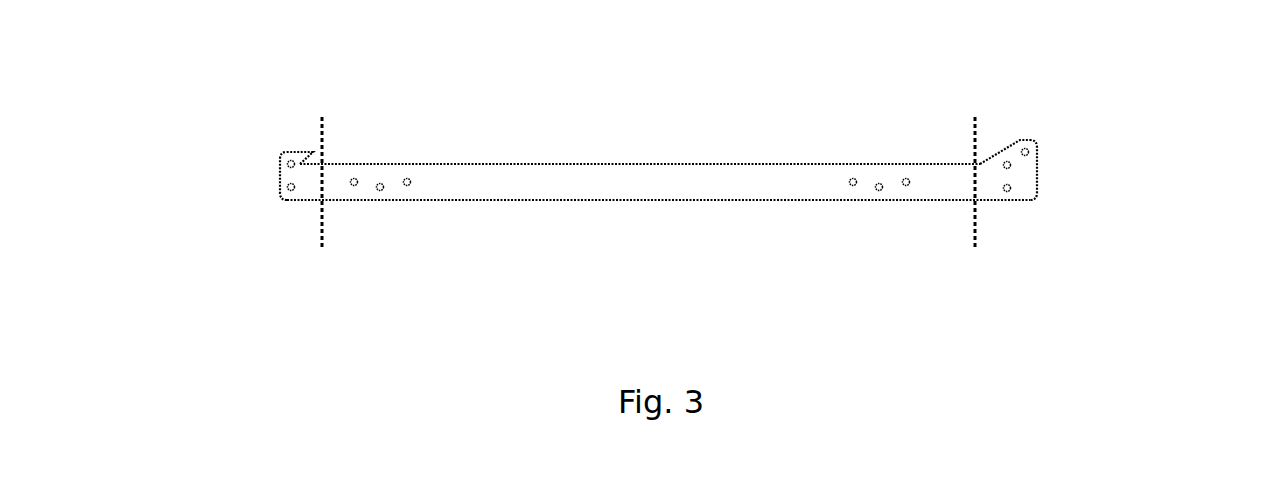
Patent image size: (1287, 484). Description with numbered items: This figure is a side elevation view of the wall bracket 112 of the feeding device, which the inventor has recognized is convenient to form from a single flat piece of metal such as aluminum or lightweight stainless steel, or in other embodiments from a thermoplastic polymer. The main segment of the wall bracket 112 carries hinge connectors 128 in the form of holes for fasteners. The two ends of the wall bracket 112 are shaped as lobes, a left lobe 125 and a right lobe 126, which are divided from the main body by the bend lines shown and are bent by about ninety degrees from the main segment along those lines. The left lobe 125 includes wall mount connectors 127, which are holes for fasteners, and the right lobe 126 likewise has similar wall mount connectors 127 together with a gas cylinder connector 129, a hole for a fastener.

The wall bracket 112 is at (635, 185).
The left lobe 125 is at (291, 116).
The right lobe 126 is at (995, 109).
The wall mount connector 127 is at (603, 221).
The hinge connector 128 is at (630, 197).
The gas cylinder connector 129 is at (1094, 102).